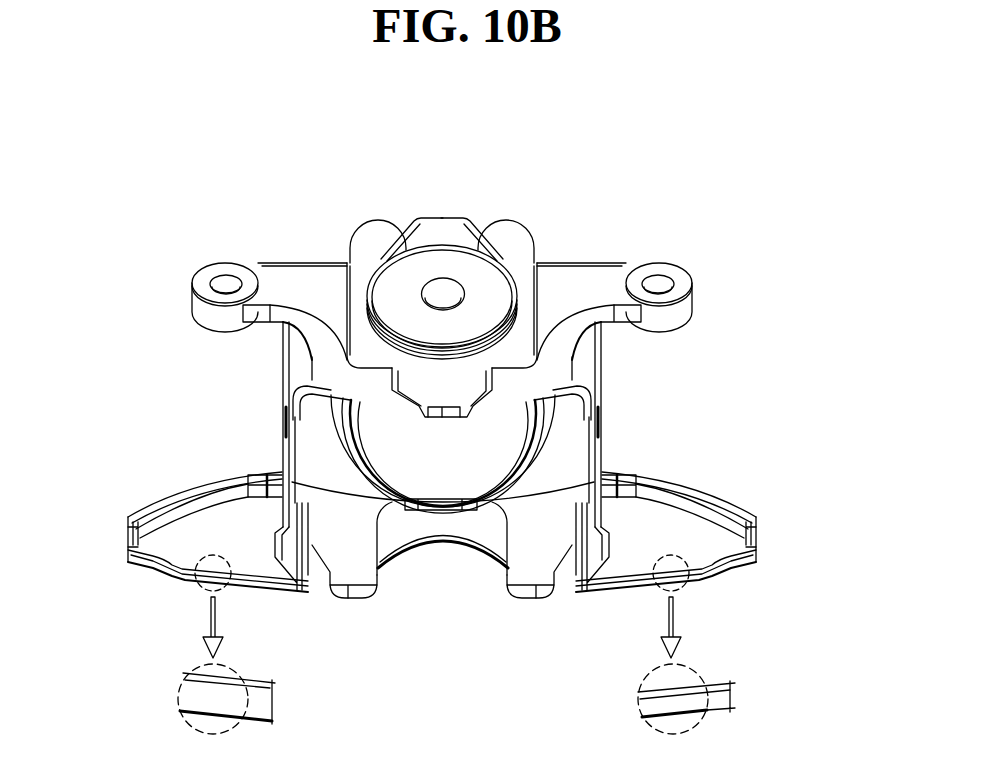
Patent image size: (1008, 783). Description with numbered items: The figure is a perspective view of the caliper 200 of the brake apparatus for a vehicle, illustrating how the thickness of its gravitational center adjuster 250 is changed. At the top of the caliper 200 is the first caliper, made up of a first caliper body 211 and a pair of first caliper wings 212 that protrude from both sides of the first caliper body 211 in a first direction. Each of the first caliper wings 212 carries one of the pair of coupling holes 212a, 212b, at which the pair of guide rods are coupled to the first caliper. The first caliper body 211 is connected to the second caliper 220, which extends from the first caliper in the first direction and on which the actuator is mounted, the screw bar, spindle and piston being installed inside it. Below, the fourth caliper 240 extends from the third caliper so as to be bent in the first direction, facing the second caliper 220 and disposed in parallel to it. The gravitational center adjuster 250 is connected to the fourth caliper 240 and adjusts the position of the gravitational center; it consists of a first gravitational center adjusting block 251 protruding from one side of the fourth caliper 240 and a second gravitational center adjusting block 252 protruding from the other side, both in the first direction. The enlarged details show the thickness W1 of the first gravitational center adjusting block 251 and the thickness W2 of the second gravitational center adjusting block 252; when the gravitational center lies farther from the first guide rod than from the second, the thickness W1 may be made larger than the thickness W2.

The caliper 200 is at (829, 140).
The first caliper body 211 is at (455, 247).
The first caliper wings 212 is at (580, 284).
The coupling hole 212a is at (220, 283).
The coupling hole 212b is at (661, 279).
The second caliper 220 is at (390, 382).
The fourth caliper 240 is at (543, 557).
The gravitational center adjuster 250 is at (479, 480).
The first gravitational center adjusting block 251 is at (187, 537).
The second gravitational center adjusting block 252 is at (692, 542).
The thickness of the first gravitational center adjusting block W1 is at (247, 644).
The thickness of the second gravitational center adjusting block W2 is at (707, 644).